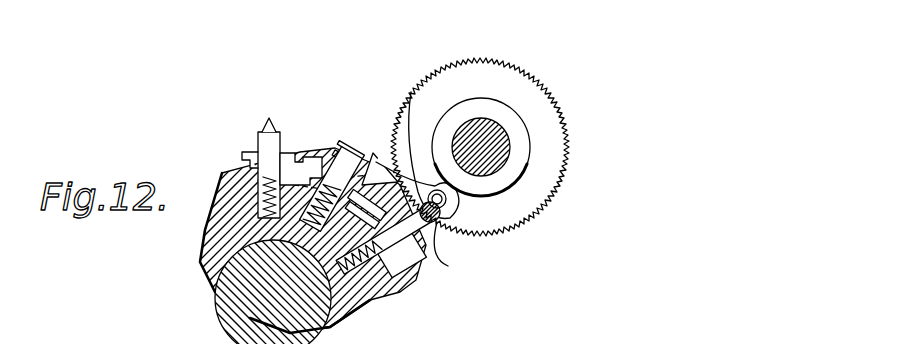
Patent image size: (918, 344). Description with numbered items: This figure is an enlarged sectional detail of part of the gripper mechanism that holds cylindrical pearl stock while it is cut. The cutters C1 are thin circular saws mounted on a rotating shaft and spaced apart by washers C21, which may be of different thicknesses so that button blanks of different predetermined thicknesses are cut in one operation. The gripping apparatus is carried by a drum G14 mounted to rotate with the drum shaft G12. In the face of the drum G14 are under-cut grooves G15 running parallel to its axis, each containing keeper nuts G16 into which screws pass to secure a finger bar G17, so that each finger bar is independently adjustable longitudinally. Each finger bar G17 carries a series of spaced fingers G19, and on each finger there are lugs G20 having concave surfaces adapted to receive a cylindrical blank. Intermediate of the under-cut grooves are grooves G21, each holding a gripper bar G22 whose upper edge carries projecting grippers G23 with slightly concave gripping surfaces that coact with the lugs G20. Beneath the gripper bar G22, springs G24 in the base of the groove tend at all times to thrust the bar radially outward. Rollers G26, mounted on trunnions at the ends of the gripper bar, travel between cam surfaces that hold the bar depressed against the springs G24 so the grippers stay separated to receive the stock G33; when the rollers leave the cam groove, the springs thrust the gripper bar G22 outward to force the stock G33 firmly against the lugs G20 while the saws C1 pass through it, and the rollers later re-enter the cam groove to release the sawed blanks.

The cutters C1 is at (498, 75).
The washers C21 is at (515, 128).
The shaft G12 is at (262, 300).
The drum G14 is at (380, 290).
The under-cut grooves G15 is at (320, 162).
The keeper nuts G16 is at (353, 182).
The finger bars G17 is at (411, 94).
The fingers G19 is at (440, 222).
The lugs G20 is at (446, 207).
The grooves G21 is at (301, 160).
The gripper bar G22 is at (258, 140).
The grippers G23 is at (274, 125).
The springs G24 is at (262, 192).
The rollers G26 is at (258, 170).
The stock G33 is at (448, 266).